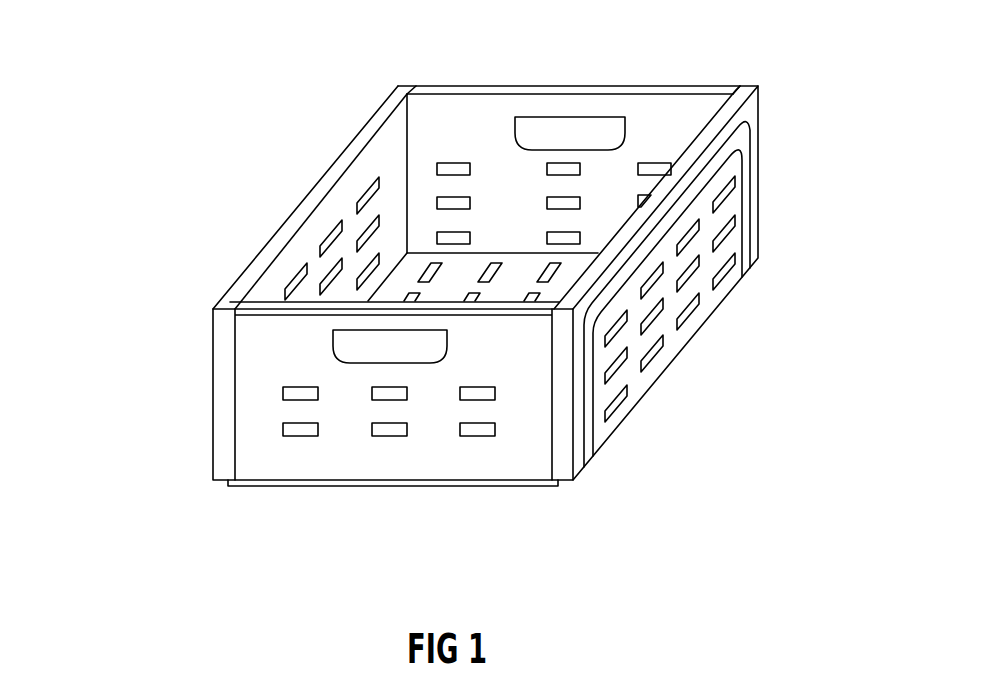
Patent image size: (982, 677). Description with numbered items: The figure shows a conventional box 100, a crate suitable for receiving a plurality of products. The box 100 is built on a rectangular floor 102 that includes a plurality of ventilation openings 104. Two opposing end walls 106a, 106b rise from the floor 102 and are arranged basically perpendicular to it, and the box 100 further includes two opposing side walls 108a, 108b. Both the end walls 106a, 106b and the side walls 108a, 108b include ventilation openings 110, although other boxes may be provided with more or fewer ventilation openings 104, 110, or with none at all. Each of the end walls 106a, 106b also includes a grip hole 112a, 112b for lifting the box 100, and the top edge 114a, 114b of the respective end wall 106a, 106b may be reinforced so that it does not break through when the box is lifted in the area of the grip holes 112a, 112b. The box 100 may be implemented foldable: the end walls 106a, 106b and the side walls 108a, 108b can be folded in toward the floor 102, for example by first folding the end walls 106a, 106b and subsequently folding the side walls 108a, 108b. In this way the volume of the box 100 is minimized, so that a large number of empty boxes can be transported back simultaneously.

The box 100 is at (128, 297).
The floor 102 is at (463, 277).
The ventilation openings 104 is at (502, 277).
The end wall 106a is at (305, 457).
The end wall 106b is at (667, 123).
The side wall 108a is at (667, 337).
The side wall 108b is at (283, 235).
The ventilation openings 110 is at (728, 188).
The grip hole 112a is at (413, 356).
The grip hole 112b is at (562, 127).
The top edge 114a is at (263, 305).
The top edge 114b is at (717, 85).